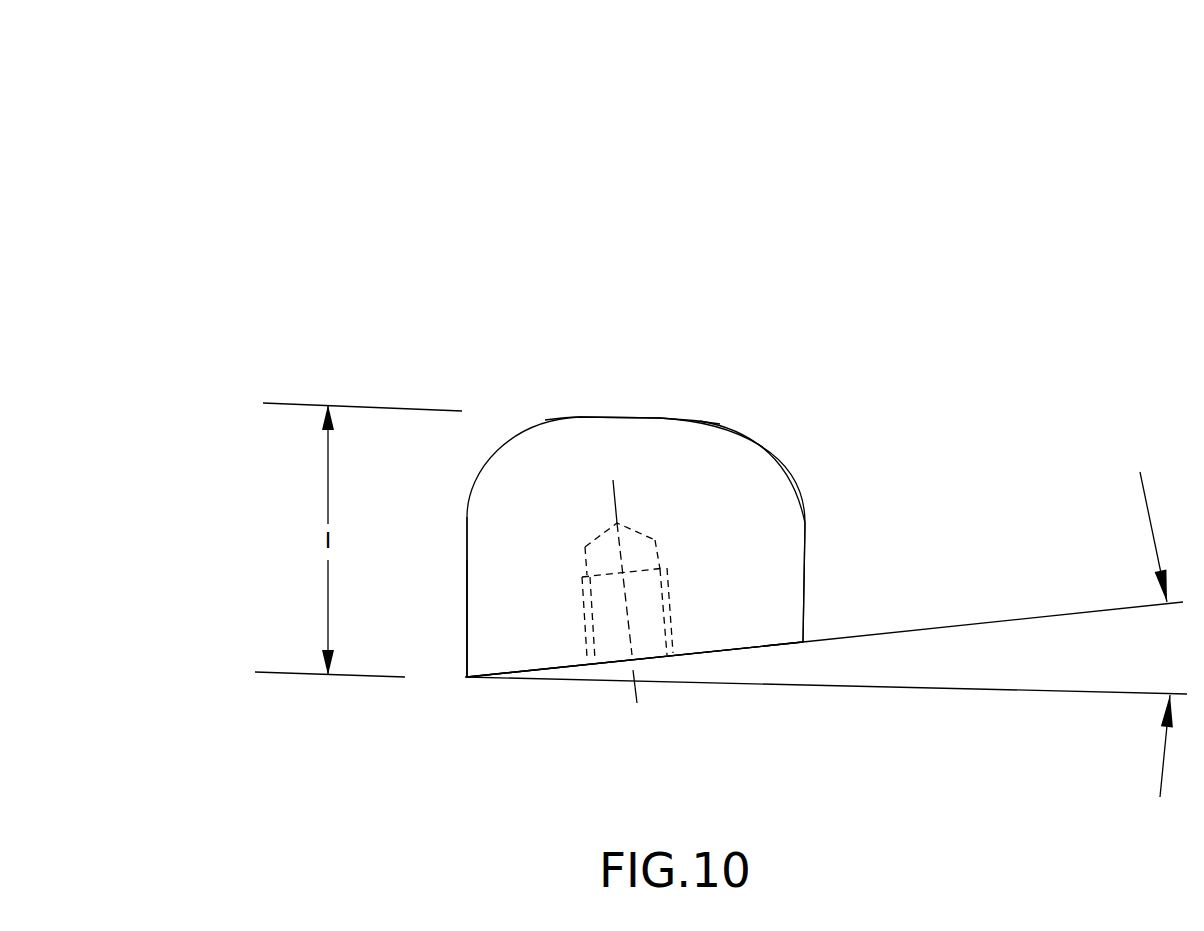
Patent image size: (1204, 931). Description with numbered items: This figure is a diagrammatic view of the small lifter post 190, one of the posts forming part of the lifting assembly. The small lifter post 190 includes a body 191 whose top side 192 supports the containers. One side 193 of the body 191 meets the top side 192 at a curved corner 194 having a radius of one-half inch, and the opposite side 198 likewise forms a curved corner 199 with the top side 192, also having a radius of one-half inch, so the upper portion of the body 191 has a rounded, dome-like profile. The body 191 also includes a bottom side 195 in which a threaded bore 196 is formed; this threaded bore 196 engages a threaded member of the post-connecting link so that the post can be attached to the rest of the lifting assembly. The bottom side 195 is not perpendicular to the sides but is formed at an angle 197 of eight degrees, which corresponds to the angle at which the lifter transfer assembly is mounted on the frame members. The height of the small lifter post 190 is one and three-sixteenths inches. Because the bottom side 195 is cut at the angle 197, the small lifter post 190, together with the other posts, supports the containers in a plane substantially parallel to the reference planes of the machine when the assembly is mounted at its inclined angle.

The small lifter post 190 is at (400, 203).
The body 191 is at (512, 627).
The top side 192 is at (617, 415).
The side 193 is at (464, 580).
The curved corner 194 is at (493, 453).
The bottom side 195 is at (737, 652).
The threaded bore 196 is at (633, 660).
The angle 197 is at (830, 634).
The side 198 is at (812, 578).
The curved corner 199 is at (770, 448).